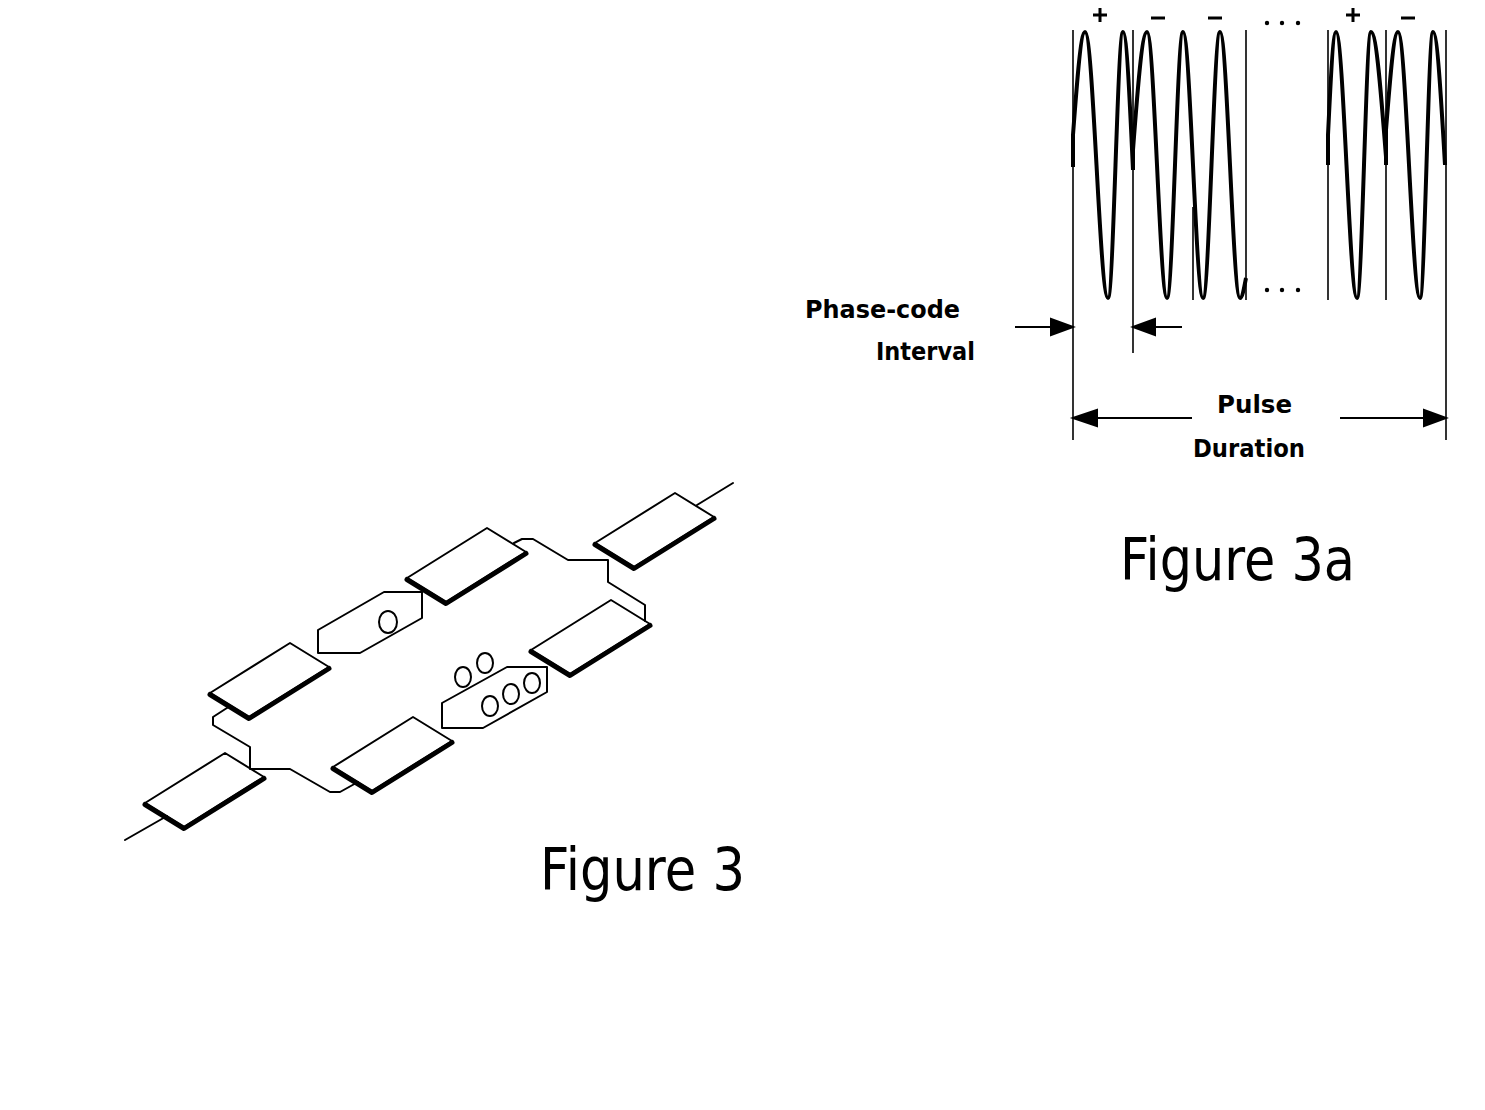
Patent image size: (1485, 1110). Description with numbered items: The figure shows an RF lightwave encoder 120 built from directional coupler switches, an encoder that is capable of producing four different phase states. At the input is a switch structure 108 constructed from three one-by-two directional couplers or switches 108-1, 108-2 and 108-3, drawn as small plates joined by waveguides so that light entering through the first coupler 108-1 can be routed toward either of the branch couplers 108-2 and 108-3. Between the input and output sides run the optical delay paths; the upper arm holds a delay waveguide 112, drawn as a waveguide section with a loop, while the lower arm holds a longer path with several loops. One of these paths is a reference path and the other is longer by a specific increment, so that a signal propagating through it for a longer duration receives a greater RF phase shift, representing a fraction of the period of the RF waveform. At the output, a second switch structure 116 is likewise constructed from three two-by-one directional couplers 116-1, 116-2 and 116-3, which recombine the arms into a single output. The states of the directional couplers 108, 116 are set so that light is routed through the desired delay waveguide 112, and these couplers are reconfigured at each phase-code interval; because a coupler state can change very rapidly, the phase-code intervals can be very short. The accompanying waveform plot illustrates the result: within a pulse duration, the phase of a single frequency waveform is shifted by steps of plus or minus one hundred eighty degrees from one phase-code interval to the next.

The switch structure 108 is at (306, 755).
The 1×2 directional coupler 108-1 is at (185, 810).
The 1×2 directional coupler 108-2 is at (268, 668).
The 1×2 directional coupler 108-3 is at (381, 766).
The optical delay path 112 is at (343, 588).
The switch structure 116 is at (563, 598).
The 2×1 directional coupler 116-1 is at (668, 527).
The 2×1 directional coupler 116-2 is at (474, 549).
The 2×1 directional coupler 116-3 is at (608, 633).
The encoder 120 is at (649, 726).